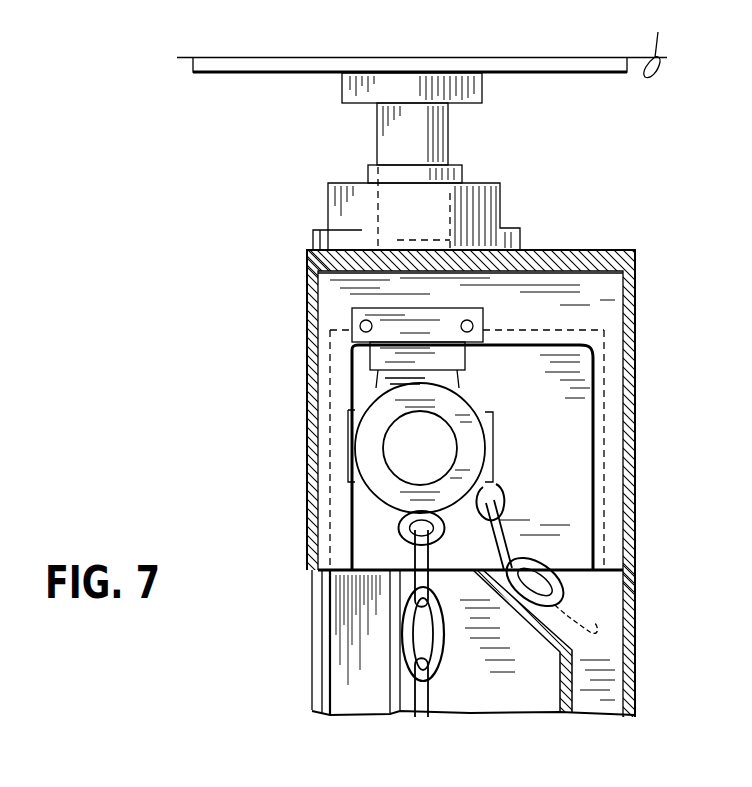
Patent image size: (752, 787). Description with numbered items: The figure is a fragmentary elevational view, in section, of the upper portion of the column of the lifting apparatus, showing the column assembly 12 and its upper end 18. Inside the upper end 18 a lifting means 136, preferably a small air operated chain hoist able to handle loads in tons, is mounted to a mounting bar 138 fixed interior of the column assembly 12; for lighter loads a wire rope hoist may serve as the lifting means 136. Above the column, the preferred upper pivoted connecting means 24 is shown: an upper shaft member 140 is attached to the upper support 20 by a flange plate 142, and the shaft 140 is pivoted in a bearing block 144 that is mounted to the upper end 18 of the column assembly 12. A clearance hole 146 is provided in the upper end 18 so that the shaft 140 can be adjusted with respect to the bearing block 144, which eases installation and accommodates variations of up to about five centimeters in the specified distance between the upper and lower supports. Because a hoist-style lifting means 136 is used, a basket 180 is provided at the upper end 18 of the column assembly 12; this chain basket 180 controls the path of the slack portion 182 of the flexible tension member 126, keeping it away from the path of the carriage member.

The column assembly 12 is at (297, 643).
The upper end of the column assembly 18 is at (644, 331).
The upper support 20 is at (652, 43).
The upper pivoted connecting means 24 is at (137, 285).
The flexible tension member 126 is at (410, 543).
The lifting means 136 is at (362, 420).
The mounting bar 138 is at (390, 310).
The upper shaft member 140 is at (450, 133).
The flange plate 142 is at (213, 73).
The bearing block 144 is at (328, 197).
The clearance hole 146 is at (393, 243).
The basket 180 is at (568, 645).
The slack portion 182 is at (500, 510).